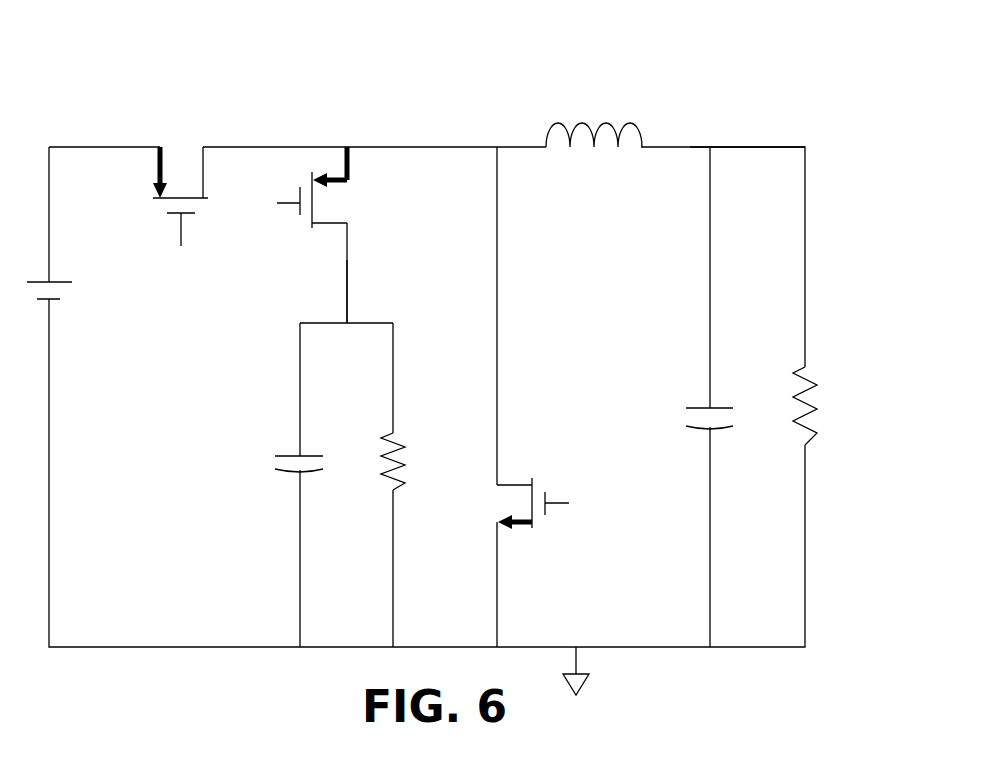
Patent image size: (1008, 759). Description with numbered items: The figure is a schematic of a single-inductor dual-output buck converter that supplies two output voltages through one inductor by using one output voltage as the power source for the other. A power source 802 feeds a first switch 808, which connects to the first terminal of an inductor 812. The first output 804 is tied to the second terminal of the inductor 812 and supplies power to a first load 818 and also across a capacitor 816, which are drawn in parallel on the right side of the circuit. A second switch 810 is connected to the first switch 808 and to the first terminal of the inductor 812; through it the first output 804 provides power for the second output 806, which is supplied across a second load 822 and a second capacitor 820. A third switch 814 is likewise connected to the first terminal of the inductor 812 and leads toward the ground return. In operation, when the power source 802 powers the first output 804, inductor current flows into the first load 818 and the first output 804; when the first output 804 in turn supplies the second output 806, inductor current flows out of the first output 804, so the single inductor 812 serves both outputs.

The power source 802 is at (98, 344).
The first output 804 is at (775, 109).
The second output 806 is at (388, 284).
The first switch 808 is at (117, 88).
The second switch 810 is at (320, 111).
The inductor 812 is at (522, 94).
The third switch 814 is at (538, 444).
The capacitor 816 is at (649, 364).
The first load 818 is at (843, 326).
The second capacitor 820 is at (211, 494).
The second load 822 is at (422, 529).